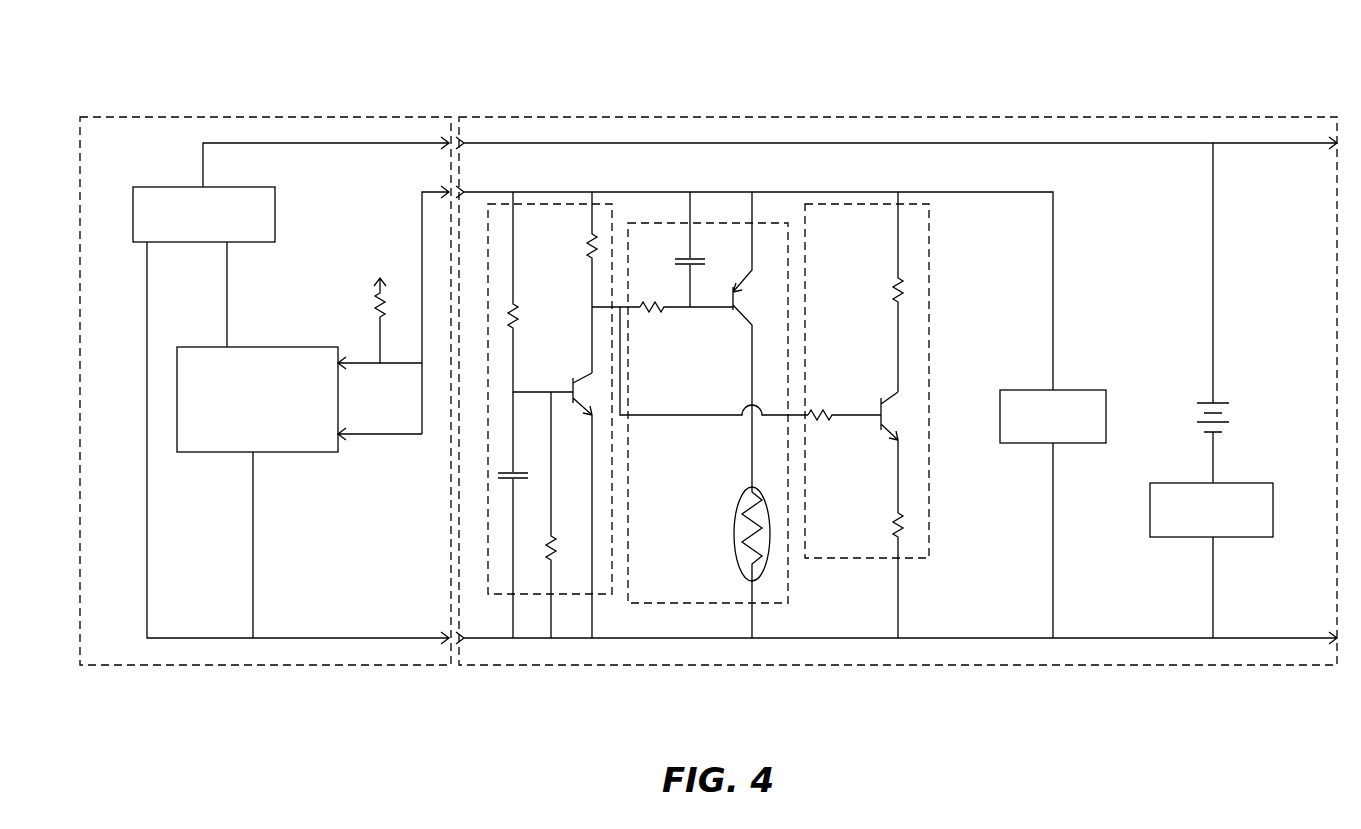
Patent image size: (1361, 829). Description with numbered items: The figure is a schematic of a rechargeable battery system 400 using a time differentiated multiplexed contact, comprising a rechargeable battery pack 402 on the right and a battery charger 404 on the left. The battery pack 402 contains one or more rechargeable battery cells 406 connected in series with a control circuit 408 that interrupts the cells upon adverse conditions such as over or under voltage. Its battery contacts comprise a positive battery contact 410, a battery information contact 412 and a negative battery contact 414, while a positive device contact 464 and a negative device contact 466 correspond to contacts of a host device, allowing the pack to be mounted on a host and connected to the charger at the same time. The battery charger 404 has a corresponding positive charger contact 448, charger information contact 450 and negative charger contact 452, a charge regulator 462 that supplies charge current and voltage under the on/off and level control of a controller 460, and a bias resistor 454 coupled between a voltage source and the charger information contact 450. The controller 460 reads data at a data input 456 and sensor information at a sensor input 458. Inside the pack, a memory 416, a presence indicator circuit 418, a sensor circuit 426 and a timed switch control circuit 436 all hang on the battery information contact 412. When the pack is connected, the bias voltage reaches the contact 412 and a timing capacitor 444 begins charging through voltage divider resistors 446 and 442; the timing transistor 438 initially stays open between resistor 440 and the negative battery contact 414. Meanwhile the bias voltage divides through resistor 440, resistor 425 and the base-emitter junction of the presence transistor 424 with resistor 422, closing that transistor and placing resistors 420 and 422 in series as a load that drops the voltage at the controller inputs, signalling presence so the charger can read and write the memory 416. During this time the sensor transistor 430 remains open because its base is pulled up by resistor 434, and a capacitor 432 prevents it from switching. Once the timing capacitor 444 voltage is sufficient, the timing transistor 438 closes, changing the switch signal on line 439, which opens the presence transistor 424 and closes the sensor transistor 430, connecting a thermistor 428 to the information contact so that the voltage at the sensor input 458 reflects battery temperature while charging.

The rechargeable battery system 400 is at (708, 354).
The rechargeable battery pack 402 is at (741, 116).
The battery charger 404 is at (400, 116).
The rechargeable battery cells 406 is at (1225, 402).
The control circuit 408 is at (1240, 538).
The positive battery contact 410 is at (466, 141).
The battery information contact 412 is at (466, 190).
The negative battery contact 414 is at (466, 641).
The memory 416 is at (1083, 389).
The presence indicator circuit 418 is at (930, 500).
The resistor 420 is at (896, 290).
The resistor 422 is at (896, 527).
The presence transistor 424 is at (880, 404).
The resistor 425 is at (818, 420).
The sensor circuit 426 is at (790, 580).
The thermistor 428 is at (735, 532).
The sensor transistor 430 is at (735, 306).
The capacitor 432 is at (700, 261).
The resistor 434 is at (650, 310).
The timed switch control circuit 436 is at (597, 595).
The timing transistor 438 is at (572, 388).
The line 439 is at (622, 360).
The resistor 440 is at (590, 248).
The resistor 442 is at (552, 545).
The timing capacitor 444 is at (498, 478).
The resistor 446 is at (514, 312).
The positive charger contact 448 is at (445, 150).
The charger information contact 450 is at (422, 193).
The negative charger contact 452 is at (440, 637).
The bias resistor 454 is at (380, 300).
The data input 456 is at (340, 363).
The sensor input 458 is at (340, 435).
The controller 460 is at (265, 453).
The charge regulator 462 is at (184, 186).
The positive device contact 464 is at (1334, 141).
The negative device contact 466 is at (1330, 642).